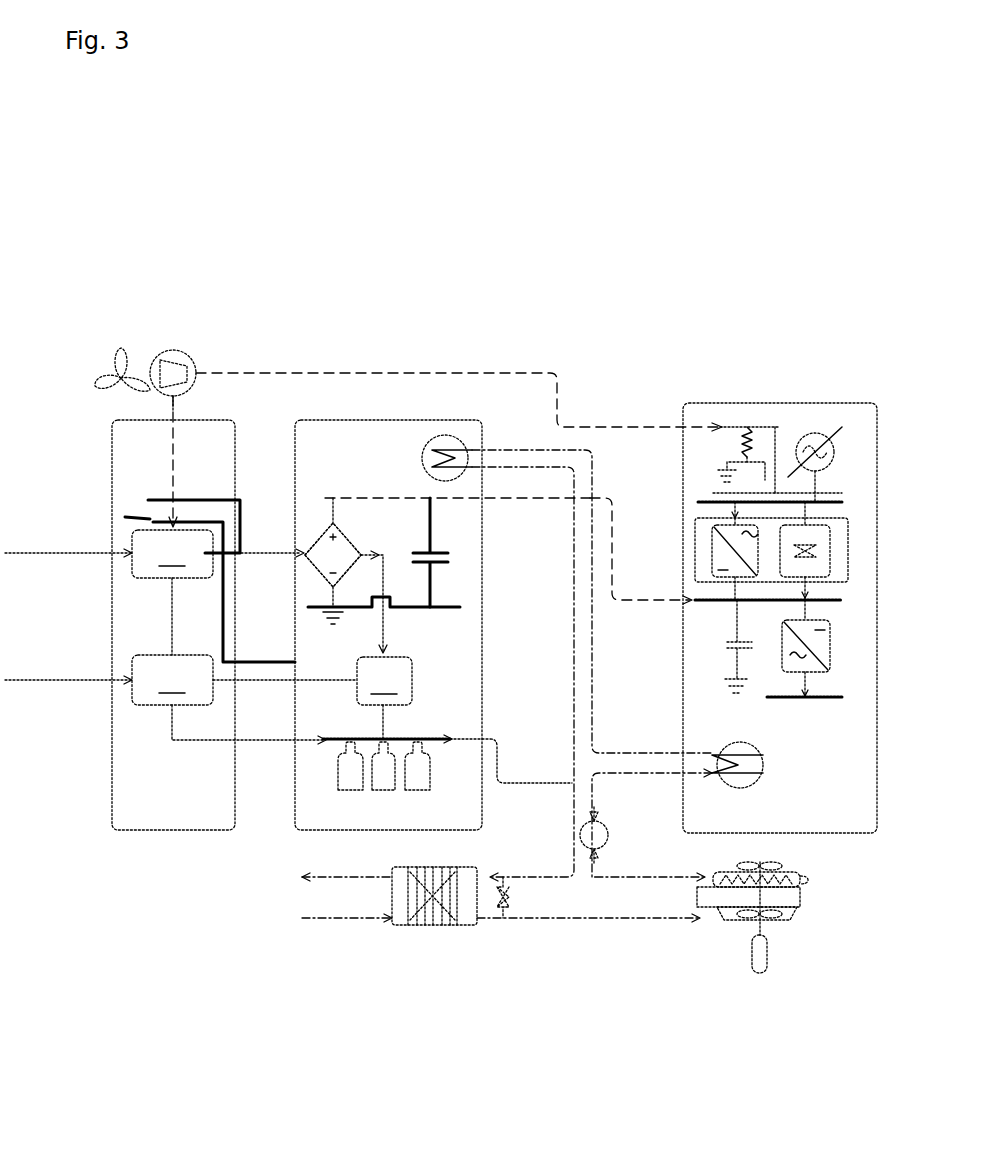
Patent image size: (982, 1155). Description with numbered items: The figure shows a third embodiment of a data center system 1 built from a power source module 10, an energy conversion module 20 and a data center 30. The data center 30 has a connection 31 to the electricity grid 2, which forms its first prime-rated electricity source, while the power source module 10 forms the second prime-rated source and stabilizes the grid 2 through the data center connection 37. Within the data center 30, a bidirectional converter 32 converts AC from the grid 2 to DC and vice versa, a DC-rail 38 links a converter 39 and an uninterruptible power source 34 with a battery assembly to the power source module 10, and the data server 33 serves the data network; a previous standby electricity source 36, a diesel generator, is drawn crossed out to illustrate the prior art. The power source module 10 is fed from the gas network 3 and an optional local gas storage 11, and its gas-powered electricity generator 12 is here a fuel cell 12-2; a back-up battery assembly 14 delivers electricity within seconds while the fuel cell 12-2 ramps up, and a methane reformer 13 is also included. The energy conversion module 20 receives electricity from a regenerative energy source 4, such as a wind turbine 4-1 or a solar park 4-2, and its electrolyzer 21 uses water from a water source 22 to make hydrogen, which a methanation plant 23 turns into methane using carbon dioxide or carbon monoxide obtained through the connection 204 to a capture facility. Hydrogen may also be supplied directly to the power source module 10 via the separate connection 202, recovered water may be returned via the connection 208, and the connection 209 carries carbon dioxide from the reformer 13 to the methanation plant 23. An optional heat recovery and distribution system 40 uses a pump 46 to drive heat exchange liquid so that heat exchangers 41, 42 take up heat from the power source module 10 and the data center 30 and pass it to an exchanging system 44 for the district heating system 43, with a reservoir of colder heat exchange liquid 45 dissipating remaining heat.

The data center system 1 is at (195, 190).
The electricity grid 2 is at (648, 428).
The gas network 3 is at (268, 742).
The regenerative energy source 4 is at (98, 316).
The wind turbine 4-1 is at (110, 383).
The solar park 4-2 is at (180, 352).
The power source module 10 is at (380, 418).
The local gas storage 11 is at (382, 768).
The gas-powered electricity generator 12 is at (350, 542).
The fuel cell 12-2 is at (333, 555).
The methane reformer 13 is at (384, 681).
The back-up battery assembly 14 is at (432, 553).
The energy conversion module 20 is at (208, 418).
The electrolyzer 21 is at (172, 554).
The water source 22 is at (77, 553).
The methanation plant 23 is at (172, 680).
The data center 30 is at (840, 403).
The connection to the electricity grid 31 is at (747, 432).
The bidirectional converter 32 is at (848, 522).
The data server 33 is at (815, 697).
The uninterruptible power source 34 is at (727, 643).
The standby electricity source 36 is at (817, 435).
The connection 37 is at (712, 503).
The DC-rail 38 is at (823, 600).
The converter 39 is at (832, 648).
The heat recovery and distribution system 40 is at (573, 532).
The heat exchanger 41 is at (452, 440).
The heat exchanger 42 is at (748, 762).
The district heating system 43 is at (486, 895).
The exchanging system 44 is at (430, 905).
The reservoir of colder heat exchange liquid 45 is at (770, 895).
The pump 46 is at (592, 838).
The separate connection 202 is at (262, 645).
The connection to direct capture facility 204 is at (88, 680).
The separate connection 208 is at (263, 551).
The connection 209 is at (266, 682).